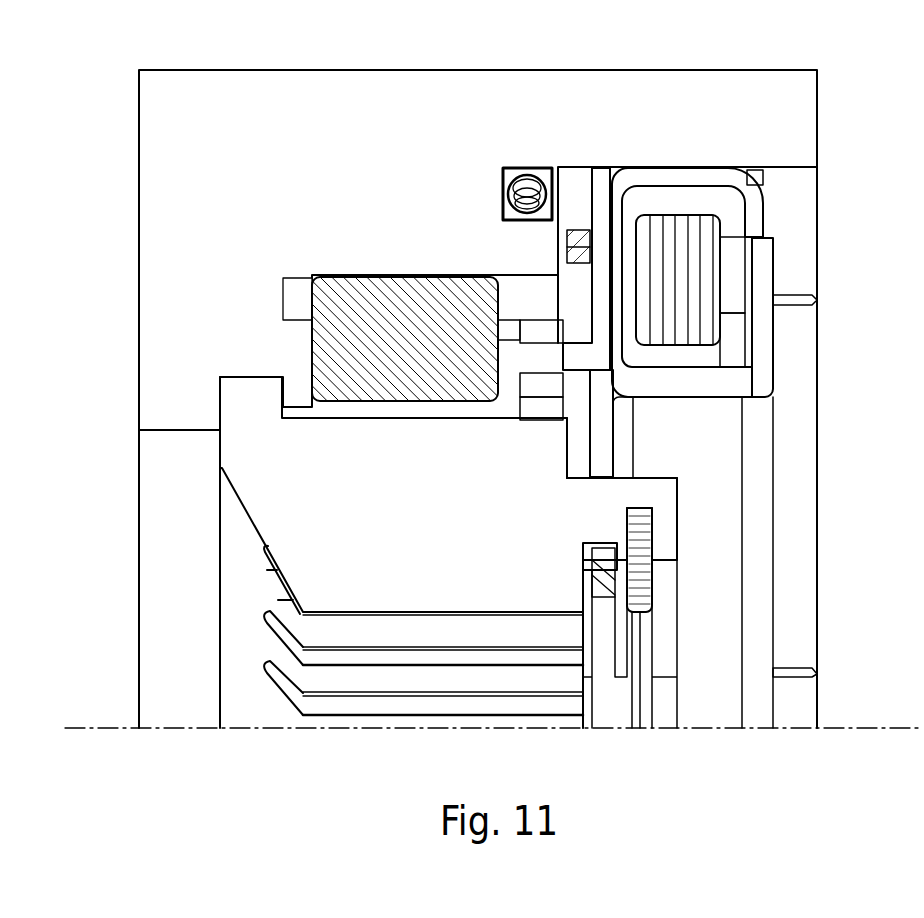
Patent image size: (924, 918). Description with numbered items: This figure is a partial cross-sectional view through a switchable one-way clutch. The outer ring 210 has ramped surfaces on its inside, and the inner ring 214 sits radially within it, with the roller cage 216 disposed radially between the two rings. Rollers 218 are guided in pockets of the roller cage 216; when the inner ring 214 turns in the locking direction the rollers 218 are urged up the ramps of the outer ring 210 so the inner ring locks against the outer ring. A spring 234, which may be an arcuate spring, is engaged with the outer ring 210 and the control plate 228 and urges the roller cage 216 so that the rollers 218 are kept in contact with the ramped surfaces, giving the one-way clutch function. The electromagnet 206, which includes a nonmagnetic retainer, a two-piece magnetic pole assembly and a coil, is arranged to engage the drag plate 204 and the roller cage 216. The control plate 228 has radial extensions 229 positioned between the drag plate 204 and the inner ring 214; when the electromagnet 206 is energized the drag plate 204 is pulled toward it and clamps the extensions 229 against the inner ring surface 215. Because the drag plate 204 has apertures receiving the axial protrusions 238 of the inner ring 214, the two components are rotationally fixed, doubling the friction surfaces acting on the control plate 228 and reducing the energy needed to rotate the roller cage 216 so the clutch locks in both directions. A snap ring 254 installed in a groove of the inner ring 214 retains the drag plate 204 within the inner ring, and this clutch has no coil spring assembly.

The outer ring 210 is at (787, 67).
The spring 234 is at (557, 181).
The electromagnet 206 is at (766, 213).
The control plate 228 is at (596, 289).
The rollers 218 is at (327, 348).
The roller cage 216 is at (528, 392).
The drag plate 204 is at (618, 418).
The inner ring 214 is at (290, 488).
The inner ring surface 215 is at (568, 453).
The radial extensions 229 is at (578, 470).
The axial protrusions 238 is at (684, 507).
The snap ring 254 is at (662, 582).